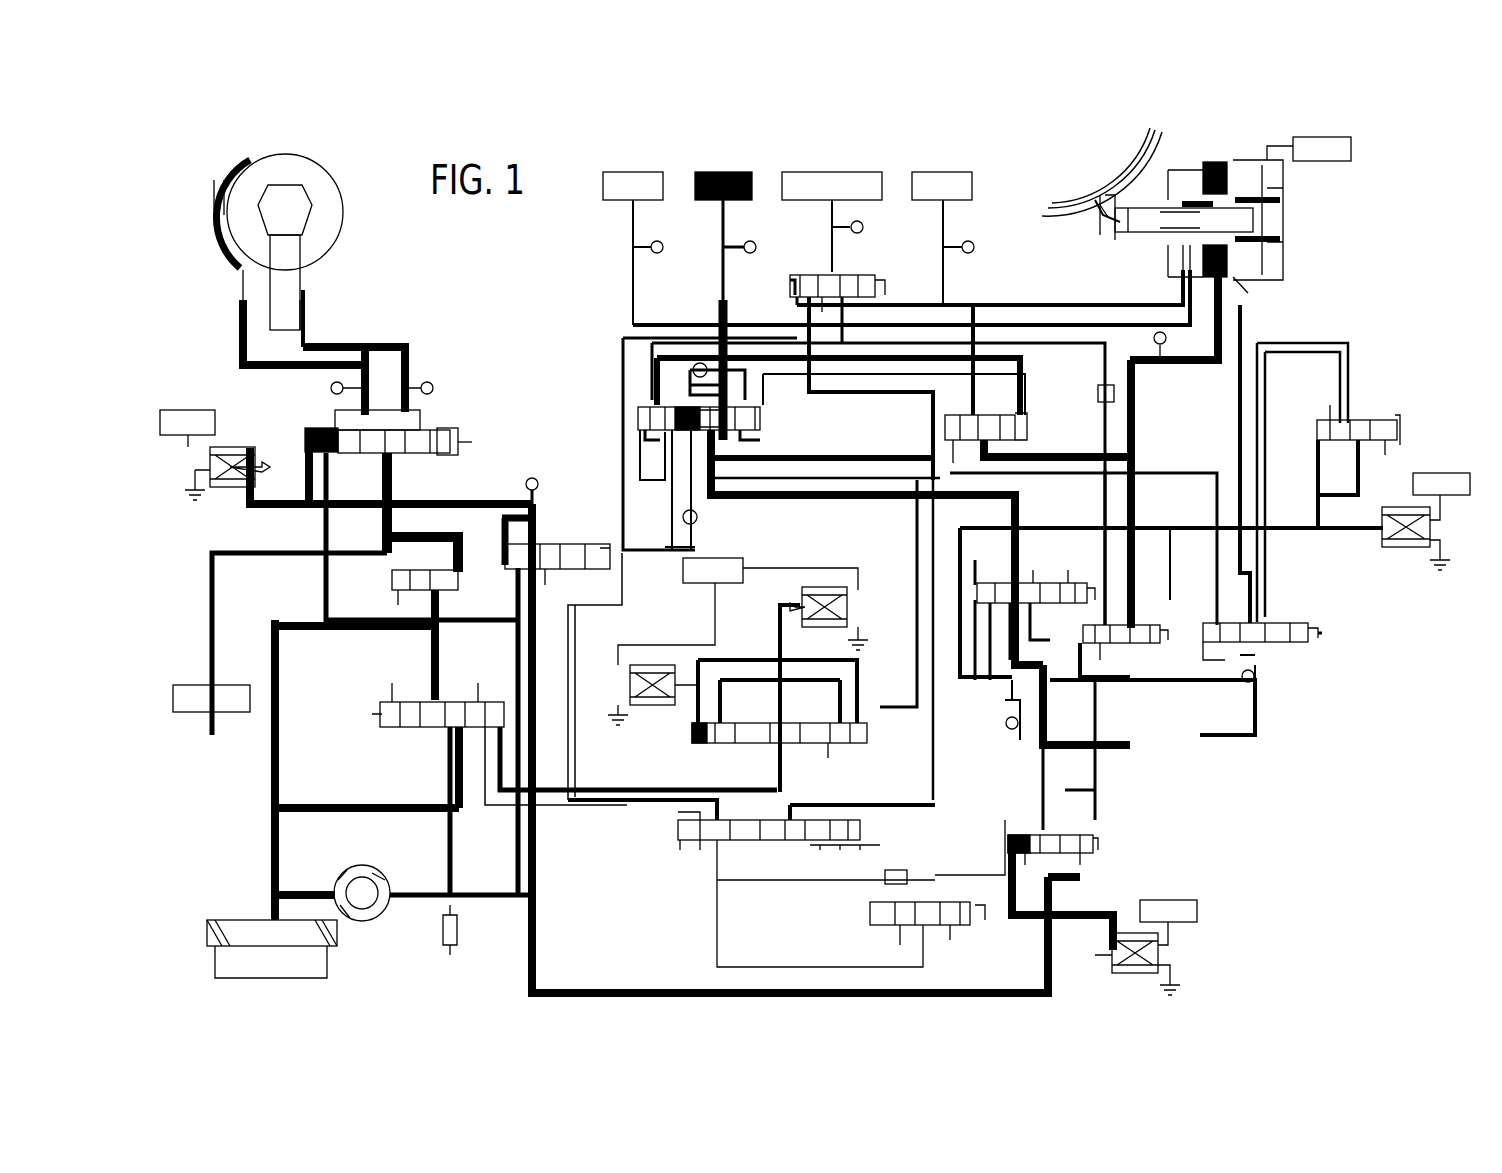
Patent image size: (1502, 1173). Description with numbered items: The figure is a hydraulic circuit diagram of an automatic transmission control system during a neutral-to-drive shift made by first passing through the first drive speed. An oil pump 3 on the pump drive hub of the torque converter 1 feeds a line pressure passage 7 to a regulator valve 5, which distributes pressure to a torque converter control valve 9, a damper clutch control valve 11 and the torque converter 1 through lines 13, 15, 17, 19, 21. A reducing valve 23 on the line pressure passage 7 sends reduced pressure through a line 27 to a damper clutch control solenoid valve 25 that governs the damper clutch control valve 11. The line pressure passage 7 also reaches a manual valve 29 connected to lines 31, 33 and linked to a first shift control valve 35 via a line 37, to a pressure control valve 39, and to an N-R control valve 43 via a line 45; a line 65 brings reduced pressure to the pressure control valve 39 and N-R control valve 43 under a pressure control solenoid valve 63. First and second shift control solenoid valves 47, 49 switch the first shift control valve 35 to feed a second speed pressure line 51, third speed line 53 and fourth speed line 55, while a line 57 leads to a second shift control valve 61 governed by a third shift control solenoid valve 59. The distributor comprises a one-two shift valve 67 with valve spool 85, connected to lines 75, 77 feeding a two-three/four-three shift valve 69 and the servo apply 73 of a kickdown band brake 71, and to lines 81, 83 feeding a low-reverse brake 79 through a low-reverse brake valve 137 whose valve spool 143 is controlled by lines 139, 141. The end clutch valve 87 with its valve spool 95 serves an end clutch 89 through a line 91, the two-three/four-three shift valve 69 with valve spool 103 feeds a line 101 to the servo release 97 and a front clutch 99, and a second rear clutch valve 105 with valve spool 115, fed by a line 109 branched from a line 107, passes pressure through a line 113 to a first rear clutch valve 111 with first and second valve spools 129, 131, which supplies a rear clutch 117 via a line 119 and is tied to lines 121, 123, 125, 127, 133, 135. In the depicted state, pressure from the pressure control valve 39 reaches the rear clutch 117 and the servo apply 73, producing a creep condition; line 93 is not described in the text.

The torque converter 1 is at (214, 258).
The oil pump 3 is at (362, 925).
The regulator valve 5 is at (405, 740).
The line pressure passage 7 is at (455, 860).
The torque converter control valve 9 is at (460, 572).
The damper clutch control valve 11 is at (455, 410).
The line 13 is at (432, 658).
The line 15 is at (380, 528).
The line 17 is at (296, 365).
The line 19 is at (358, 347).
The line 21 is at (210, 608).
The reducing valve 23 is at (560, 540).
The damper clutch control solenoid valve 25 is at (230, 495).
The line 27 is at (495, 503).
The manual valve 29 is at (668, 830).
The line 31 is at (600, 790).
The line 33 is at (496, 798).
The first shift control valve 35 is at (715, 745).
The line 37 is at (777, 768).
The pressure control valve 39 is at (1105, 845).
The N-R control valve 43 is at (865, 914).
The line 45 is at (715, 921).
The first shift control solenoid valve 47 is at (855, 607).
The second shift control solenoid valve 49 is at (645, 725).
The second speed pressure line 51 is at (880, 690).
The third speed line 53 is at (960, 690).
The fourth speed line 55 is at (915, 530).
The line 57 is at (1182, 530).
The third shift control solenoid valve 59 is at (1407, 552).
The second shift control valve 61 is at (1370, 418).
The pressure control solenoid valve 63 is at (1180, 957).
The line 65 is at (633, 990).
The 1-2 shift valve 67 is at (1148, 622).
The 2-3/4-3 shift valve 69 is at (1030, 437).
The kickdown band brake 71 is at (1110, 245).
The servo apply 73 is at (1218, 172).
The line 75 is at (1120, 748).
The line 77 is at (1136, 505).
The low-reverse brake 79 is at (830, 170).
The line 81 is at (1098, 790).
The line 83 is at (1103, 498).
The valve spool 85 is at (1128, 640).
The end clutch valve 87 is at (1320, 634).
The end clutch 89 is at (941, 170).
The line 91 is at (1236, 398).
The passage 93 is at (1185, 470).
The valve spool 95 is at (1232, 622).
The servo release 97 is at (1175, 252).
The front clutch 99 is at (631, 170).
The line 101 is at (975, 305).
The valve spool 103 is at (985, 410).
The second rear clutch valve 105 is at (1045, 610).
The line 107 is at (905, 800).
The line 109 is at (975, 585).
The first rear clutch valve 111 is at (636, 418).
The line 113 is at (738, 502).
The valve spool 115 is at (1048, 568).
The rear clutch 117 is at (721, 170).
The line 119 is at (718, 290).
The line 121 is at (575, 607).
The line 123 is at (1025, 362).
The line 125 is at (870, 455).
The line 127 is at (650, 482).
The first valve spool 129 is at (650, 432).
The second valve spool 131 is at (730, 432).
The line 133 is at (1064, 378).
The line 135 is at (1262, 425).
The low-reverse brake valve 137 is at (788, 288).
The line 139 is at (624, 358).
The line 141 is at (824, 400).
The valve spool 143 is at (820, 278).